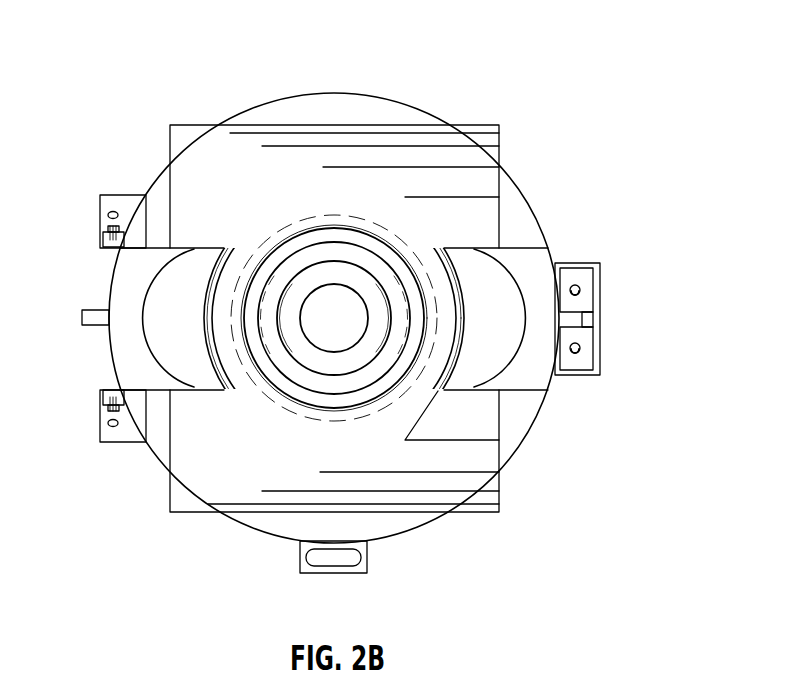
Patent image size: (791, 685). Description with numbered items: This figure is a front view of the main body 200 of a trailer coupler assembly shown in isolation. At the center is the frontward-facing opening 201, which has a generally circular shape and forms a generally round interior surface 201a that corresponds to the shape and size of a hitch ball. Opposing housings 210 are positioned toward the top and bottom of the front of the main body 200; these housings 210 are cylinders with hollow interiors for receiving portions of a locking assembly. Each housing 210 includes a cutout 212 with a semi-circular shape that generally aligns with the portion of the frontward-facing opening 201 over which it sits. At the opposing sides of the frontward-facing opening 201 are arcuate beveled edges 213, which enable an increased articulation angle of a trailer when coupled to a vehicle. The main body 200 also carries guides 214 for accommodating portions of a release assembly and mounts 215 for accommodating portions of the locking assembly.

The main body 200 is at (567, 52).
The frontward-facing opening 201 is at (293, 212).
The interior surface 201a is at (437, 347).
The housings 210 is at (186, 147).
The cutout 212 is at (362, 195).
The beveled edges 213 is at (160, 324).
The guides 214 is at (582, 248).
The mounts 215 is at (101, 242).